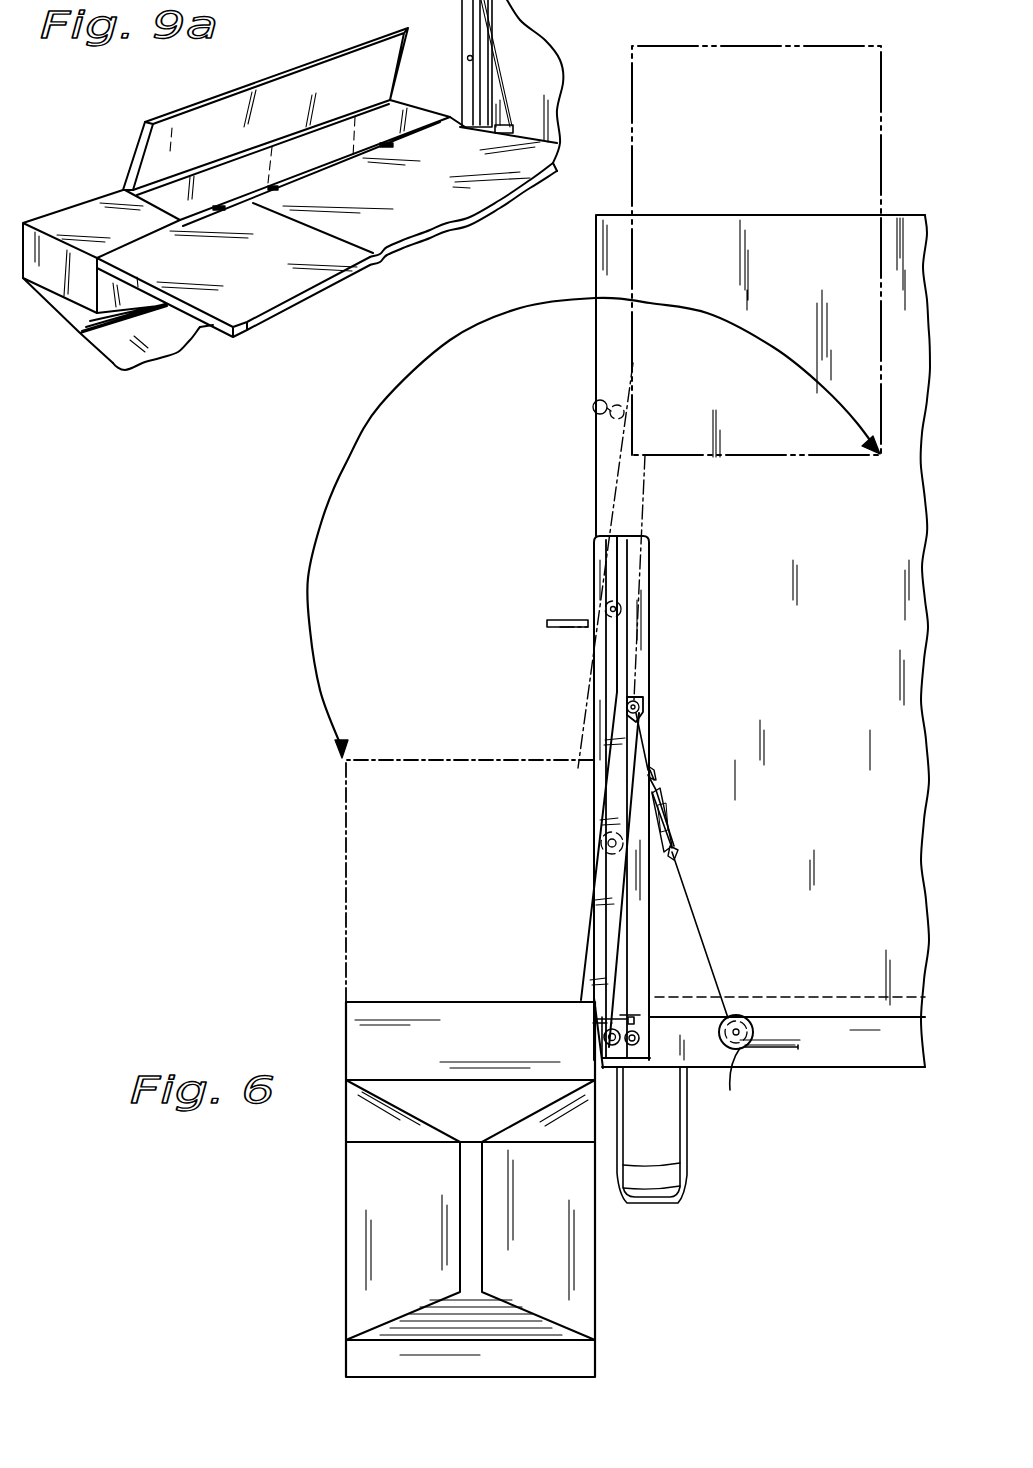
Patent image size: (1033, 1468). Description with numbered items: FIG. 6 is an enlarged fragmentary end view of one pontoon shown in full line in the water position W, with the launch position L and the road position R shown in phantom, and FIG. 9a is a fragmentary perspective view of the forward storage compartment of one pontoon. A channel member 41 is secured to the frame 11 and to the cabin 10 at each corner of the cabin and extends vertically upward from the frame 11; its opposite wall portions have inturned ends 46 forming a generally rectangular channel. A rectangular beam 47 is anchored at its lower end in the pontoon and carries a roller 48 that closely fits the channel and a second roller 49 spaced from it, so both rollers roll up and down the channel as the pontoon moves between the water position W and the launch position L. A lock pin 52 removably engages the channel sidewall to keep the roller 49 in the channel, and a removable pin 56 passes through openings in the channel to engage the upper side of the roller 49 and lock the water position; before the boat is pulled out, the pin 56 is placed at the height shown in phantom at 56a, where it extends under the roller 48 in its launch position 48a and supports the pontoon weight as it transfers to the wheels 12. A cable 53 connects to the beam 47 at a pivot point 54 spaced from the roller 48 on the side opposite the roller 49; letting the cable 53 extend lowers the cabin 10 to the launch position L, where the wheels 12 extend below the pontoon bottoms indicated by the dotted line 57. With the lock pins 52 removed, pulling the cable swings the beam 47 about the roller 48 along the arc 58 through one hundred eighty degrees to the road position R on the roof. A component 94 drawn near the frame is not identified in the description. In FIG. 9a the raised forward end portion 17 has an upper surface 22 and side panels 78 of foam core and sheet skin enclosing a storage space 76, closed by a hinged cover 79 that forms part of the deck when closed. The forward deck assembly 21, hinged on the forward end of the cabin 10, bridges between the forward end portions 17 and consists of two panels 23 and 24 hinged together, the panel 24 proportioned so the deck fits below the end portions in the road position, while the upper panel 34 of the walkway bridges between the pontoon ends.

In FIG. 9A, the cabin 10 is at (540, 47).
In FIG. 6, the cabin 10 is at (596, 347).
In FIG. 6, the frame 11 is at (856, 1055).
In FIG. 6, the wheels 12 is at (690, 1158).
In FIG. 9A, the forward end portions of the pontoons 17 is at (67, 283).
In FIG. 9A, the forward deck assembly 21 is at (212, 326).
In FIG. 9A, the upper surface of the pontoon ends 22 is at (82, 213).
In FIG. 9A, the panel 23 is at (297, 283).
In FIG. 9A, the panel 24 is at (430, 220).
In FIG. 9A, the upper panel 34 is at (424, 84).
In FIG. 6, the channel member 41 is at (590, 558).
In FIG. 6, the inturned ends 46 is at (600, 585).
In FIG. 9A, the rectangular beam 47 is at (470, 34).
In FIG. 6, the rectangular beam 47 is at (617, 781).
In FIG. 6, the roller 48 is at (603, 857).
In FIG. 6, the launch position of the roller 48a is at (622, 609).
In FIG. 6, the second roller 49 is at (613, 1067).
In FIG. 6, the lock pin 52 is at (640, 1037).
In FIG. 6, the cable 53 is at (700, 935).
In FIG. 6, the pivot point 54 is at (643, 707).
In FIG. 6, the removable pin 56 is at (603, 1019).
In FIG. 6, the phantom position of the pin 56a is at (555, 632).
In FIG. 6, the dotted line 57 is at (418, 1144).
In FIG. 6, the arc 58 is at (353, 453).
In FIG. 9A, the storage space 76 is at (182, 190).
In FIG. 9A, the side panels 78 is at (324, 163).
In FIG. 9A, the cover 79 is at (271, 76).
In FIG. 6, the pulley 94 is at (740, 1050).
In FIG. 6, the road position R is at (765, 46).
In FIG. 6, the launch position L is at (346, 822).
In FIG. 6, the water position W is at (346, 1218).